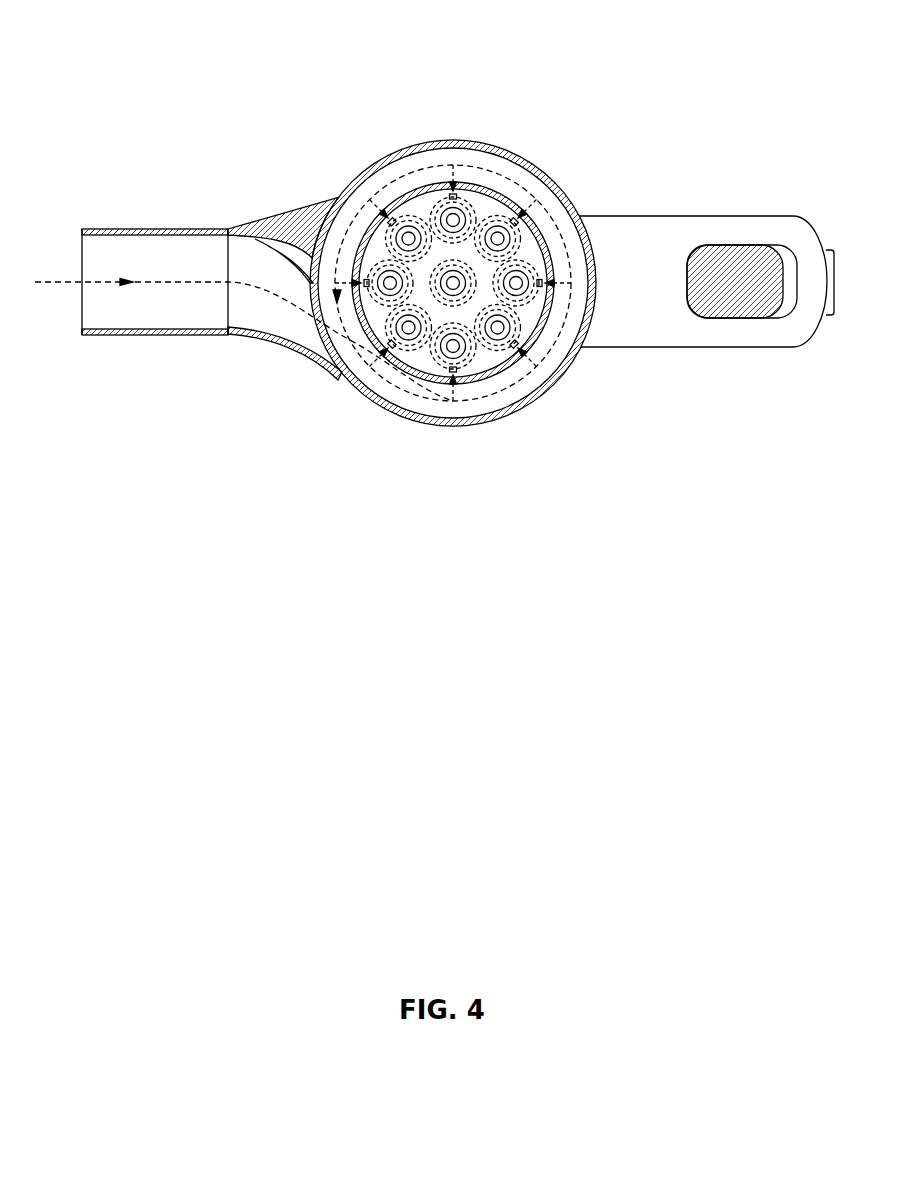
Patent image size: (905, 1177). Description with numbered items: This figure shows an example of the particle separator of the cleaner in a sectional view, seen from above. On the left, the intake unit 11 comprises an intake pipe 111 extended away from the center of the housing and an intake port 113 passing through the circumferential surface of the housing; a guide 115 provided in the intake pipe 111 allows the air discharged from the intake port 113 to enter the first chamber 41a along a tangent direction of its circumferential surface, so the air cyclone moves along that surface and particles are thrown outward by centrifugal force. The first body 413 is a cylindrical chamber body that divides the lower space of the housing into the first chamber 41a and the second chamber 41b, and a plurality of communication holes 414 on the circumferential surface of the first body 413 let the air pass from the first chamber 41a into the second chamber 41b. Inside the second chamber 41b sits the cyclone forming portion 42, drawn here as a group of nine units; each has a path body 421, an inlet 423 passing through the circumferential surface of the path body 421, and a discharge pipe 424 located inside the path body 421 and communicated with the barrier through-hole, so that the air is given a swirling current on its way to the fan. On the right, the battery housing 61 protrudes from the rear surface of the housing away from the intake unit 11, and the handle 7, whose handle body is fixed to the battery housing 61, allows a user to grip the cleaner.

The intake unit 11 is at (420, 143).
The intake pipe 111 is at (148, 335).
The intake port 113 is at (312, 332).
The guide 115 is at (275, 258).
The first body 413 is at (555, 378).
The communication holes 414 is at (412, 187).
The first chamber 41a is at (447, 155).
The second chamber 41b is at (482, 209).
The cyclone forming portion 42 is at (383, 272).
The path body 421 is at (477, 282).
The inlet 423 is at (452, 282).
The discharge pipe 424 is at (510, 217).
The battery housing 61 is at (645, 216).
The handle 7 is at (795, 275).